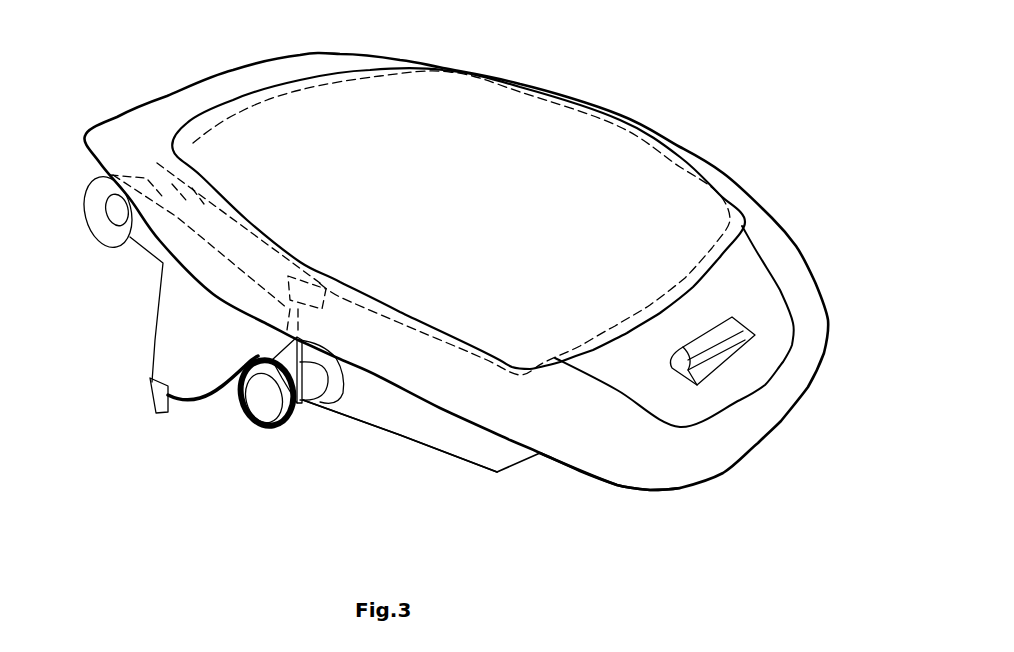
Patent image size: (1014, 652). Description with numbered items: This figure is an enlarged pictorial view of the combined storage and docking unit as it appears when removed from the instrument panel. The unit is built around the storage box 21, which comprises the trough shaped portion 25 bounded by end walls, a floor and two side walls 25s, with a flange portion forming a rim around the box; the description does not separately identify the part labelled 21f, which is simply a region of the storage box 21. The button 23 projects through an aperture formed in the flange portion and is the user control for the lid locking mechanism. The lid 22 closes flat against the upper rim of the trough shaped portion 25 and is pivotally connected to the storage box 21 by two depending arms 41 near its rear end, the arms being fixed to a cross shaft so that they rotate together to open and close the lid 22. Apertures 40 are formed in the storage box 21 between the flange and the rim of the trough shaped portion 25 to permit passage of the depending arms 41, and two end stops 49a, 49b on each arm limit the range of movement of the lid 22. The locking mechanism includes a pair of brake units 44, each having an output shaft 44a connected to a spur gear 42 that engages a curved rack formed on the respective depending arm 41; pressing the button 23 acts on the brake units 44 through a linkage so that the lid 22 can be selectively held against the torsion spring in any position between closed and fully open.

The storage box 21 is at (722, 474).
The front portion of housing 21f is at (573, 471).
The lid 22 is at (720, 194).
The button 23 is at (712, 378).
The trough shaped portion 25 is at (496, 473).
The side walls 25s is at (440, 452).
The apertures 40 is at (173, 217).
The depending arms 41 is at (153, 342).
The spur gear 42 is at (275, 415).
The brake unit 44 is at (338, 372).
The output shaft 44a is at (308, 403).
The end stop 49a is at (242, 407).
The end stop 49b is at (160, 414).